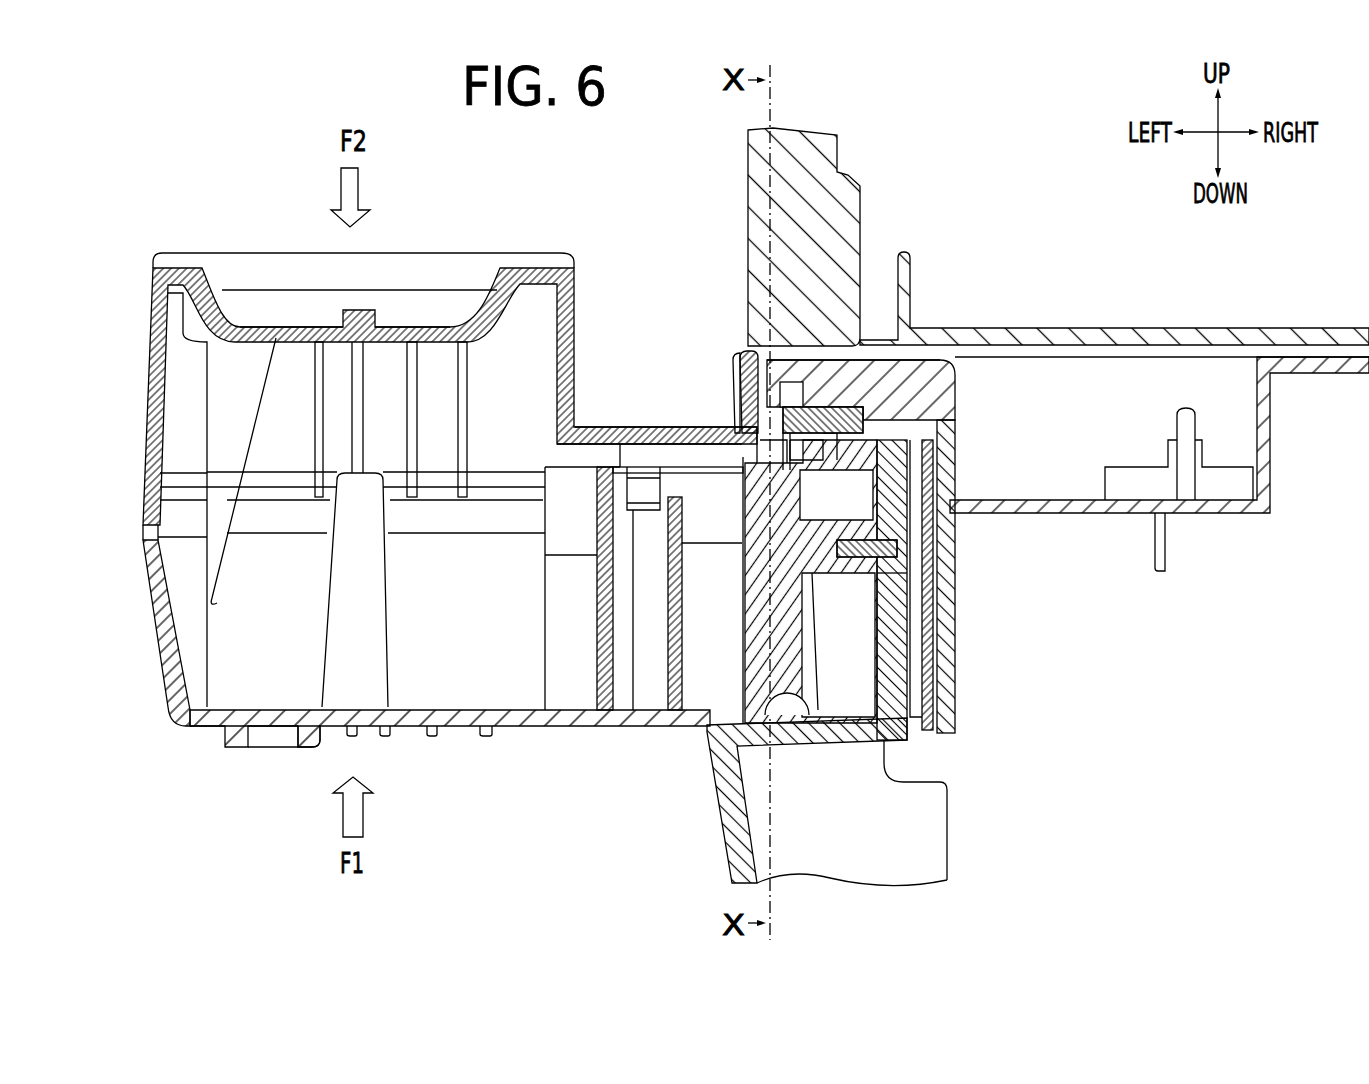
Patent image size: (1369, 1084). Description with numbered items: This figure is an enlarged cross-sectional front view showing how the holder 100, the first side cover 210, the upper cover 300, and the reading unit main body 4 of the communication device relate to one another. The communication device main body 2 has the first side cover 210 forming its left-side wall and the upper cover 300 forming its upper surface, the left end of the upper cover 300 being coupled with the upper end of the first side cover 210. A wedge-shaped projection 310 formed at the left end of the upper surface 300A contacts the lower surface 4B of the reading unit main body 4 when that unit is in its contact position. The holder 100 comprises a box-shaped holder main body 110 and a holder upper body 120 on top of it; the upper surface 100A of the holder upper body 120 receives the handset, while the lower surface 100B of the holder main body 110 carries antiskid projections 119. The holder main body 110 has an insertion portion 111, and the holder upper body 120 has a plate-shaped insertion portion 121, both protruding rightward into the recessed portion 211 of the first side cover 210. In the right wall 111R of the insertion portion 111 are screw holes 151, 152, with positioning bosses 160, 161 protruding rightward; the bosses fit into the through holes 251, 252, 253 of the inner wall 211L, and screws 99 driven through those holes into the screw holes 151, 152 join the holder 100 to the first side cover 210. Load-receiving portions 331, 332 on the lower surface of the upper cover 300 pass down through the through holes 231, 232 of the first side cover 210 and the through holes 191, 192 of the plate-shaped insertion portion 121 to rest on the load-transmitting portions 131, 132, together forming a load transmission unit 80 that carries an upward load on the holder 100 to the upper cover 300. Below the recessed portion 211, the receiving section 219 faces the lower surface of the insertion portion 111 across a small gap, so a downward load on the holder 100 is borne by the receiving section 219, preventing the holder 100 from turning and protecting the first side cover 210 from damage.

The communication device main body 2 is at (1068, 454).
The reading unit main body 4 is at (1058, 240).
The lower surface 4B is at (1046, 352).
The load transmission unit 80 is at (692, 332).
The screws 99 is at (900, 578).
The holder 100 is at (158, 771).
The upper surface 100A is at (291, 324).
The lower surface 100B is at (213, 728).
The holder main body 110 is at (150, 630).
The insertion portion 111 is at (848, 703).
The right wall 111R is at (940, 777).
The antiskid projections 119 is at (307, 749).
The holder upper body 120 is at (140, 465).
The plate-shaped insertion portion 121 is at (608, 427).
The load-transmitting portion 131 is at (934, 448).
The load-transmitting portion 132 is at (905, 452).
The screw hole 151 is at (854, 753).
The screw hole 152 is at (815, 592).
The positioning boss 160 is at (1019, 585).
The positioning boss 161 is at (918, 582).
The through hole 191 is at (728, 426).
The through hole 192 is at (750, 445).
The first side cover 210 is at (880, 678).
The recessed portion 211 is at (762, 800).
The inner wall 211L is at (915, 490).
The receiving section 219 is at (727, 763).
The through hole 231 is at (692, 332).
The through hole 232 is at (746, 350).
The through hole 251 is at (991, 538).
The through hole 252 is at (991, 538).
The through hole 253 is at (905, 542).
The upper cover 300 is at (953, 373).
The upper surface 300A is at (928, 358).
The projection 310 is at (861, 327).
The load-receiving portion 331 is at (927, 407).
The load-receiving portion 332 is at (937, 420).